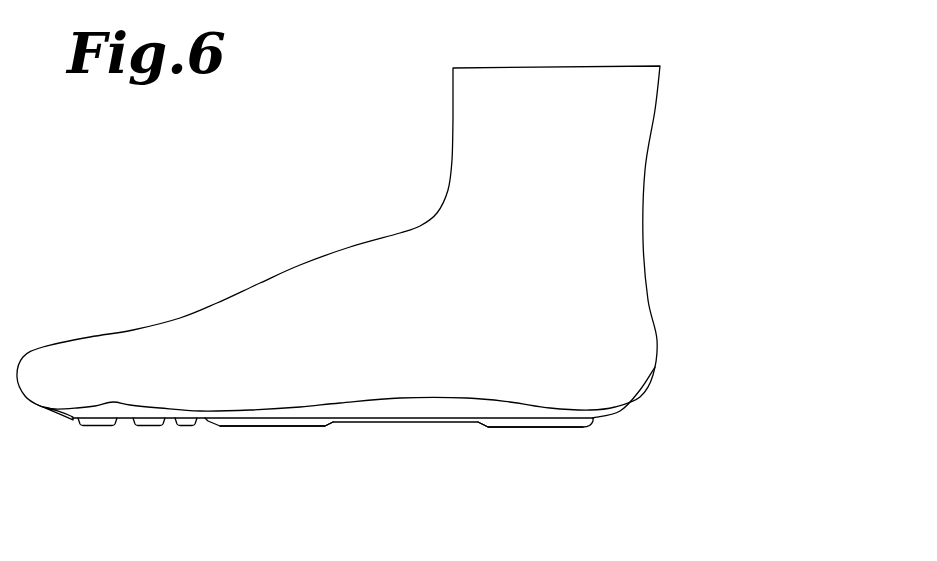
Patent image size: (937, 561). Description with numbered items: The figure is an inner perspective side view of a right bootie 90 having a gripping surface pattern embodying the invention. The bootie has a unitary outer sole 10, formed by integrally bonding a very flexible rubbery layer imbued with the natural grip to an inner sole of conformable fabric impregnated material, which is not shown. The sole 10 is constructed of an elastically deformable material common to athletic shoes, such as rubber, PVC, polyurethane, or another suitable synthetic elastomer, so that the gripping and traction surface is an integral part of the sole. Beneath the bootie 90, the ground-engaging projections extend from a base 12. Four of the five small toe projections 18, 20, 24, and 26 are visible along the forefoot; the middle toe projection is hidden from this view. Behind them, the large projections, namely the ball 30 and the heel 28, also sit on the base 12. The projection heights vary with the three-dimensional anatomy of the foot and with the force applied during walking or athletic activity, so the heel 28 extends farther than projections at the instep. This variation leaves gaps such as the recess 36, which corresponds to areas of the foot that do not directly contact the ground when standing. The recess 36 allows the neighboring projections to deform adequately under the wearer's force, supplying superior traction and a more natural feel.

The right bootie 90 is at (303, 248).
The shoe sole 10 is at (593, 443).
The base surface 12 is at (617, 408).
The small projection 24 is at (58, 420).
The small projection 26 is at (100, 425).
The small projection 20 is at (150, 425).
The small projection 18 is at (185, 427).
The recess 36 is at (410, 453).
The ball projection 30 is at (293, 428).
The heel projection 28 is at (530, 427).